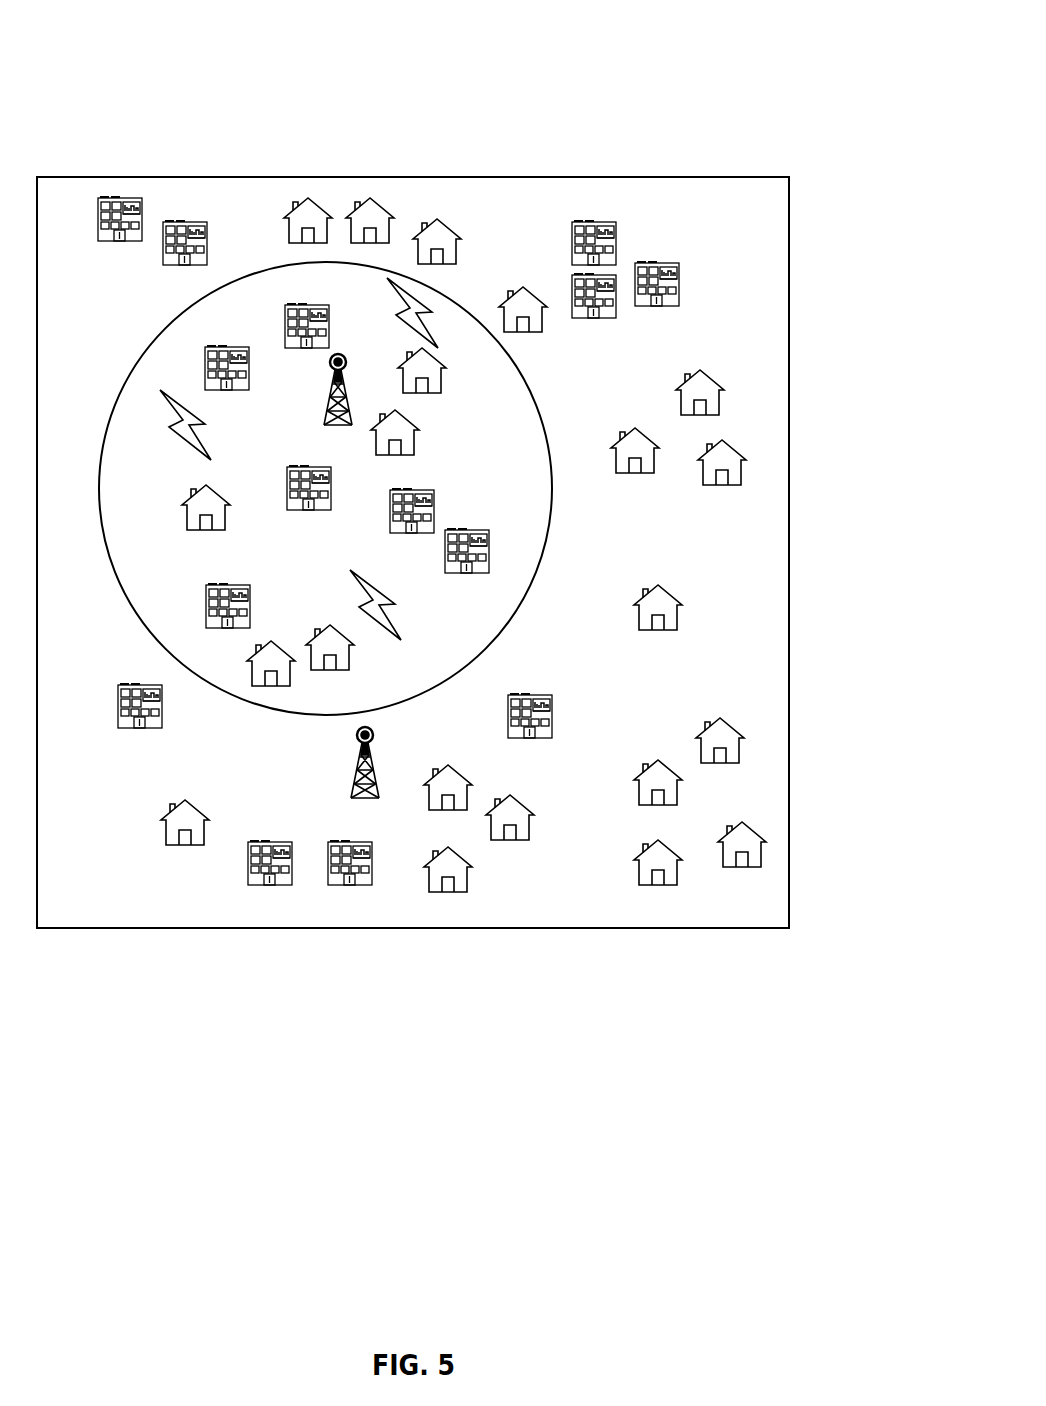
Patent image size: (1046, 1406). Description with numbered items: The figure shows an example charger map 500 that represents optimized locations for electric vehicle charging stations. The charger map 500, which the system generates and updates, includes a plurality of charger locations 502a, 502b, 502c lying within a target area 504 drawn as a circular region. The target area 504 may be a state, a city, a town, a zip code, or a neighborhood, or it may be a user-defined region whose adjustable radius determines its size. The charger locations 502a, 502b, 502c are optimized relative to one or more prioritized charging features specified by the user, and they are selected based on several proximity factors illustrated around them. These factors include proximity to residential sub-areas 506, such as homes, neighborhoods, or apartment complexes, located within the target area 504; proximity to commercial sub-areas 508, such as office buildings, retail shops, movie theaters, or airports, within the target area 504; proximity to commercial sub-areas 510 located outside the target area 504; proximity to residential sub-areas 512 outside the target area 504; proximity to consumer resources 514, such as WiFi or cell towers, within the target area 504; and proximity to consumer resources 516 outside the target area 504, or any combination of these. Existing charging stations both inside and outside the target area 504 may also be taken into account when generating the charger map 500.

The charger map 500 is at (810, 60).
The charger location 502a is at (430, 303).
The charger location 502b is at (171, 432).
The charger location 502c is at (356, 576).
The target area 504 is at (148, 347).
The residential sub-area 506 is at (418, 437).
The commercial sub-area 508 is at (228, 585).
The commercial sub-area 510 is at (553, 722).
The residential sub-area 512 is at (663, 588).
The consumer resource 514 is at (326, 408).
The consumer resource 516 is at (358, 763).